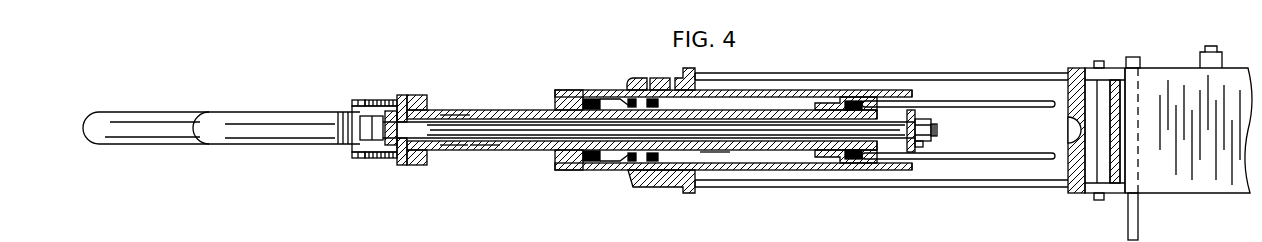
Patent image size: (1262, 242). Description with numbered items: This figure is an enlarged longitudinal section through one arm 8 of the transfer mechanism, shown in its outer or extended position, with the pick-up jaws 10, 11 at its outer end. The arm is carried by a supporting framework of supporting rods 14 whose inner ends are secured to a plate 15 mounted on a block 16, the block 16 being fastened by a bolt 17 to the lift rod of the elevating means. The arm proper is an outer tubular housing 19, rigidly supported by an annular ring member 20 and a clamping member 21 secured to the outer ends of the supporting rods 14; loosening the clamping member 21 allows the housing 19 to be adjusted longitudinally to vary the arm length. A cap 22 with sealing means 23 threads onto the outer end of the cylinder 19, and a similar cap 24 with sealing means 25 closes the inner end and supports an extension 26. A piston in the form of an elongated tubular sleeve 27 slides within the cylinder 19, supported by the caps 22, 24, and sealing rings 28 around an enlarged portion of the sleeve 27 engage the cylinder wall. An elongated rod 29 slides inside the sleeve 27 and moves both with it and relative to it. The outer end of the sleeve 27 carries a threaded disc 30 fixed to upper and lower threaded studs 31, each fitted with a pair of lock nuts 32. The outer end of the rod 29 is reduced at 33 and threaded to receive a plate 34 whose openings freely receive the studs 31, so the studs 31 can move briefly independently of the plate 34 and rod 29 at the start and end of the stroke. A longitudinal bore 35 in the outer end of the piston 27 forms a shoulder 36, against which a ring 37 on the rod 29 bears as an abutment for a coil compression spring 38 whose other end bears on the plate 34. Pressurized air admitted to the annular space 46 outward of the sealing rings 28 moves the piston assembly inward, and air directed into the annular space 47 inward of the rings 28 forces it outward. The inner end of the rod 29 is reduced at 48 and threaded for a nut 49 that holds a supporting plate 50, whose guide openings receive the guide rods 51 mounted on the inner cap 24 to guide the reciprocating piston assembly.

The arm 8 is at (521, 98).
The jaw 10 is at (222, 147).
The jaw 11 is at (143, 146).
The supporting rod 14 is at (868, 73).
The plate 15 is at (1062, 186).
The block 16 is at (1170, 70).
The bolt 17 is at (1213, 46).
The outer tubular housing 19 is at (732, 151).
The annular ring member 20 is at (664, 187).
The clamping member 21 is at (657, 78).
The cap 22 is at (580, 170).
The sealing means 23 is at (590, 99).
The cap 24 is at (838, 163).
The sealing means 25 is at (834, 97).
The extension 26 is at (905, 92).
The tubular piston sleeve 27 is at (522, 150).
The sealing ring 28 is at (631, 90).
The rod 29 is at (768, 132).
The disc 30 is at (418, 95).
The threaded stud 31 is at (382, 100).
The lock nut 32 is at (359, 100).
The smaller diameter portion 33 is at (396, 148).
The plate 34 is at (402, 95).
The longitudinal bore 35 is at (455, 112).
The shoulder 36 is at (486, 111).
The ring 37 is at (482, 150).
The coil compression spring 38 is at (456, 150).
The annular space 46 is at (612, 162).
The annular space 47 is at (714, 152).
The smaller diameter portion 48 is at (937, 130).
The nut 49 is at (921, 147).
The supporting plate 50 is at (909, 152).
The guide rod 51 is at (1031, 120).